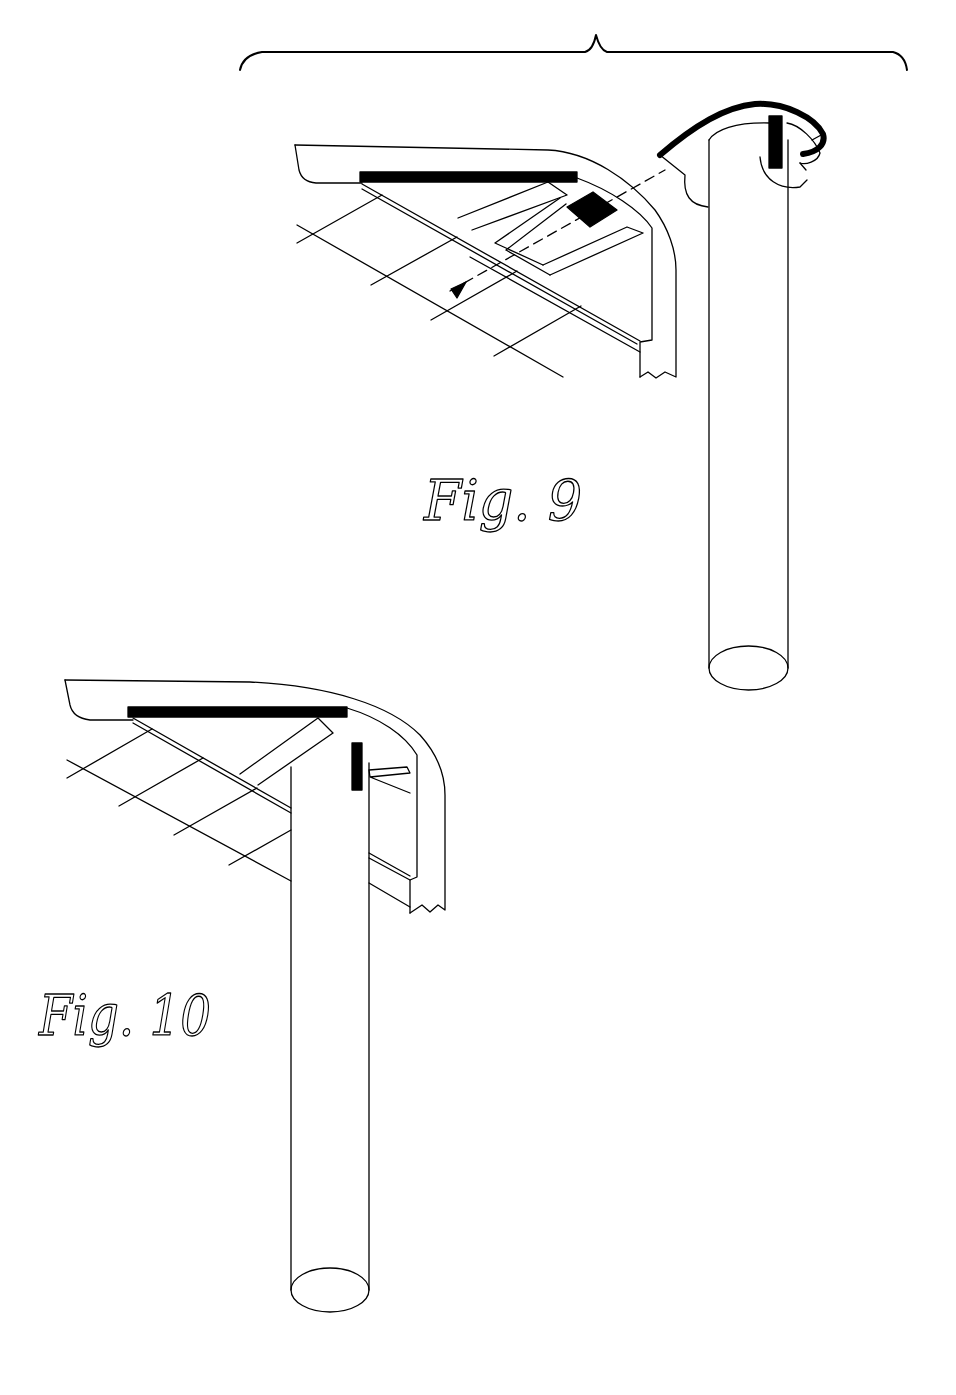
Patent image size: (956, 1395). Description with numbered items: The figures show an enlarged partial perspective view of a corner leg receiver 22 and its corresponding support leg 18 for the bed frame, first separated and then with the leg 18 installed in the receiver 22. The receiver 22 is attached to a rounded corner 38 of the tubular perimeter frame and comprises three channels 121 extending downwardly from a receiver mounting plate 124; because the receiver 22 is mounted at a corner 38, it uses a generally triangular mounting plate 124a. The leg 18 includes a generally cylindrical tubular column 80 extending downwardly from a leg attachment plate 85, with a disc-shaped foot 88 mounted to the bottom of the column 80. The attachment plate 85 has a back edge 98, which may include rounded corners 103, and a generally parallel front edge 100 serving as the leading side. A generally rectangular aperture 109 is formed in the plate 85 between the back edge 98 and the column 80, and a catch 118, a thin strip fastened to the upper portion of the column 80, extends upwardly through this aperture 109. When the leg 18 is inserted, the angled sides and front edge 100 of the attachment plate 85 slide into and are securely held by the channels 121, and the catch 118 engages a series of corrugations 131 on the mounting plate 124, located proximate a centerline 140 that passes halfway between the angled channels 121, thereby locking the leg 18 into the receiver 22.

In FIG. 9, the leg 18 is at (763, 443).
In FIG. 10, the leg 18 is at (344, 1052).
In FIG. 9, the leg receiver 22 is at (362, 212).
In FIG. 10, the leg receiver 22 is at (125, 752).
In FIG. 9, the corner 38 is at (566, 153).
In FIG. 10, the corner 38 is at (383, 710).
In FIG. 9, the column 80 is at (709, 553).
In FIG. 10, the column 80 is at (291, 1173).
In FIG. 9, the leg attachment plate 85 is at (805, 185).
In FIG. 10, the leg attachment plate 85 is at (410, 767).
In FIG. 9, the foot 88 is at (767, 680).
In FIG. 10, the foot 88 is at (347, 1300).
In FIG. 9, the back edge 98 is at (793, 115).
In FIG. 9, the front edge 100 is at (708, 207).
In FIG. 9, the rounded corners 103 is at (757, 100).
In FIG. 9, the aperture 109 is at (812, 140).
In FIG. 9, the catch 118 is at (806, 170).
In FIG. 9, the channels 121 is at (520, 224).
In FIG. 10, the receiver mounting plate 124 is at (205, 710).
In FIG. 9, the triangular mounting plate 124a is at (450, 172).
In FIG. 9, the corrugations 131 is at (597, 195).
In FIG. 9, the centerline 140 is at (455, 296).